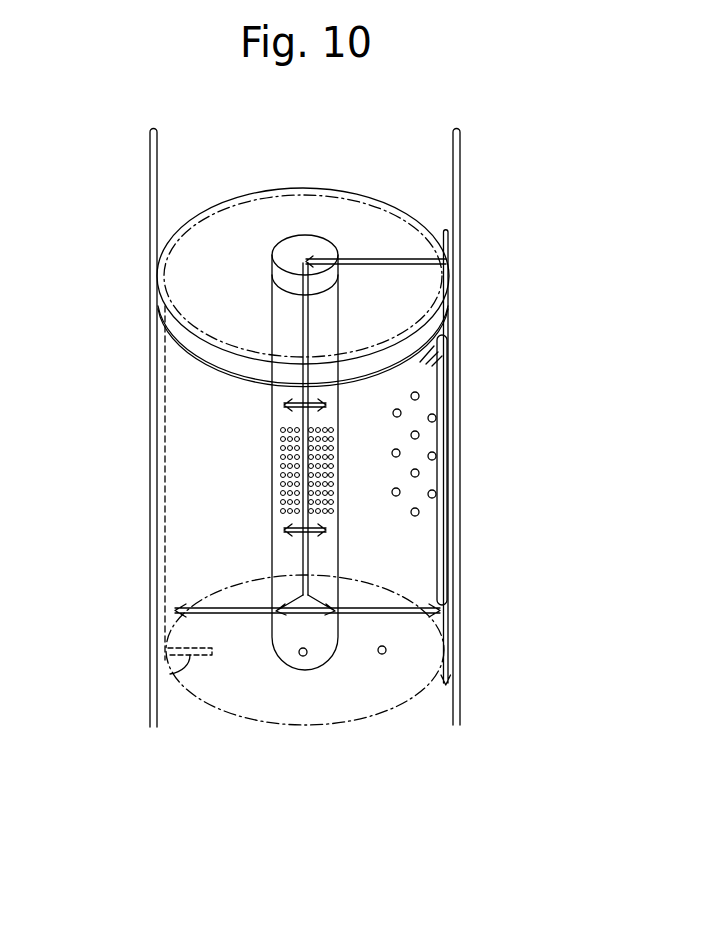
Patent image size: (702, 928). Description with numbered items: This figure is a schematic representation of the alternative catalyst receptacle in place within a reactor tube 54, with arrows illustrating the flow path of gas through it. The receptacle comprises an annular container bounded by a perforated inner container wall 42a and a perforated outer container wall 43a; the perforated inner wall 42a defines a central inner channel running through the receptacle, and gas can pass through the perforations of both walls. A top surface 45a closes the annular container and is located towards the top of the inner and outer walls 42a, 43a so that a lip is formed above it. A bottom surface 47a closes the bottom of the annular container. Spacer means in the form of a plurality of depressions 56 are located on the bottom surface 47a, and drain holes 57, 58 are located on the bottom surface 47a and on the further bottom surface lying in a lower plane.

The reactor tube 54 is at (150, 174).
The top surface 45a is at (305, 215).
The perforated inner container wall 42a is at (280, 465).
The perforated outer container wall 43a is at (427, 435).
The bottom surface 47a is at (380, 713).
The depressions 56 is at (178, 673).
The drain hole 57 is at (303, 657).
The drain hole 58 is at (388, 648).